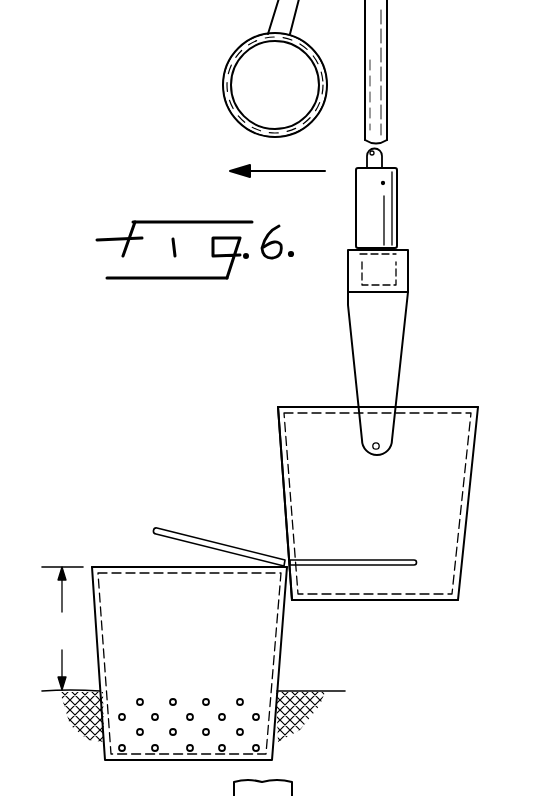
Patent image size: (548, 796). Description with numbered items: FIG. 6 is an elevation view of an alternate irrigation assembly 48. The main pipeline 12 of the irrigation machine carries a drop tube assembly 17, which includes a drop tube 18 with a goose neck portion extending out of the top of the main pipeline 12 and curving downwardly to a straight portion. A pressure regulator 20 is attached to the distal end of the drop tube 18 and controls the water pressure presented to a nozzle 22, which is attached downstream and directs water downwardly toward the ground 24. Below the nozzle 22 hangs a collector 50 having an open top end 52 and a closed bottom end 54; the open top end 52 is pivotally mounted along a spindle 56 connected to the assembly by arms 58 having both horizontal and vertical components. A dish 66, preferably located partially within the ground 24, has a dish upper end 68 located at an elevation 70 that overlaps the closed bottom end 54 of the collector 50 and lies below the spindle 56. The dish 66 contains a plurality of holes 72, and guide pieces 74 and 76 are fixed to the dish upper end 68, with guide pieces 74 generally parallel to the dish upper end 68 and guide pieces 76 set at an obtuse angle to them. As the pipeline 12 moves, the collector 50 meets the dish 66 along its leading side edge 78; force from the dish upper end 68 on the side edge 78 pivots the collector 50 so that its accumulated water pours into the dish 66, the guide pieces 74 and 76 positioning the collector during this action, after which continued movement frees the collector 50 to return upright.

The main pipeline 12 is at (238, 118).
The drop tube assembly 17 is at (393, 104).
The drop tube 18 is at (388, 31).
The pressure regulator 20 is at (397, 202).
The nozzle 22 is at (352, 291).
The ground 24 is at (303, 690).
The irrigation assembly 48 is at (213, 70).
The collector 50 is at (295, 445).
The open top end 52 is at (328, 405).
The closed bottom end 54 is at (403, 601).
The spindle 56 is at (384, 443).
The arms 58 is at (394, 357).
The dish 66 is at (263, 643).
The dish upper end 68 is at (152, 565).
The elevation 70 is at (62, 628).
The holes 72 is at (190, 752).
The guide pieces 74 is at (381, 534).
The guide pieces 76 is at (235, 512).
The leading side edge 78 is at (283, 467).